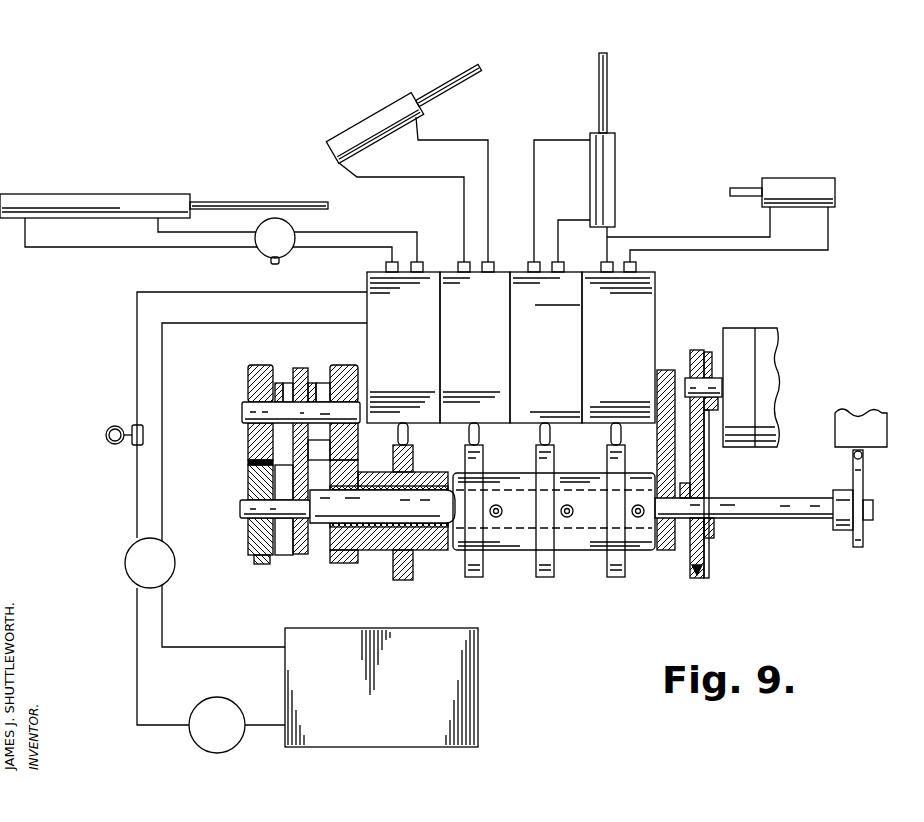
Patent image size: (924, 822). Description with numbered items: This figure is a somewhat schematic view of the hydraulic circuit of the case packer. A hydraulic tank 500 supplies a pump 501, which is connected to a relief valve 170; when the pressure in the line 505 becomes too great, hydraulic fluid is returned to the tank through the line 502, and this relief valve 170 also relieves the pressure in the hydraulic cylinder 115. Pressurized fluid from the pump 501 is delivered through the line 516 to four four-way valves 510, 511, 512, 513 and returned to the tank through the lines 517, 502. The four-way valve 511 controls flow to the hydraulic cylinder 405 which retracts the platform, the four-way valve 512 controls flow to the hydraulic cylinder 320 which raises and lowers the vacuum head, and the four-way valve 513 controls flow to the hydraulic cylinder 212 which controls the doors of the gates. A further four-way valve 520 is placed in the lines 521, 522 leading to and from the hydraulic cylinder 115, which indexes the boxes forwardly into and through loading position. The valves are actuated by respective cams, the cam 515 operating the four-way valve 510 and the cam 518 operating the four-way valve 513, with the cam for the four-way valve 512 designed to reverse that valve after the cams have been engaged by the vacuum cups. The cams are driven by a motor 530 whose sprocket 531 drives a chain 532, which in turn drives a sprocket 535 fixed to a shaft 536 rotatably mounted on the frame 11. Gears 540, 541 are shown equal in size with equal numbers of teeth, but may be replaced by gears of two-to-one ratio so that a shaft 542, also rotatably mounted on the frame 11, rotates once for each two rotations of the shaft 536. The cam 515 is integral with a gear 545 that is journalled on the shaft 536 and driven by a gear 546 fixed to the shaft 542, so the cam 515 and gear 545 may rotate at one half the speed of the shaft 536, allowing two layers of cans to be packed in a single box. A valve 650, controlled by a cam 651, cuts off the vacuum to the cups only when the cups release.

The hydraulic cylinder 115 is at (87, 196).
The hydraulic cylinder 405 is at (370, 120).
The hydraulic cylinder 320 is at (608, 158).
The hydraulic cylinder 212 is at (788, 180).
The four-way valve 520 is at (265, 250).
The line 521 is at (355, 232).
The line 522 is at (336, 248).
The four-way valve 510 is at (403, 347).
The four-way valve 511 is at (475, 347).
The four-way valve 512 is at (546, 347).
The four-way valve 513 is at (618, 347).
The line 516 is at (137, 350).
The line 517 is at (163, 347).
The cam 518 is at (616, 577).
The cam 515 is at (403, 580).
The relief valve 170 is at (133, 548).
The pump 501 is at (230, 697).
The line 502 is at (194, 647).
The line 505 is at (136, 645).
The hydraulic tank 500 is at (463, 672).
The frame 11 is at (300, 555).
The gear 540 is at (252, 485).
The gear 541 is at (250, 440).
The shaft 542 is at (242, 408).
The gear 545 is at (340, 563).
The gear 546 is at (345, 365).
The shaft 536 is at (700, 505).
The sprocket 531 is at (697, 368).
The chain 532 is at (709, 432).
The sprocket 535 is at (705, 546).
The motor 530 is at (765, 330).
The valve 650 is at (861, 425).
The cam 651 is at (863, 478).